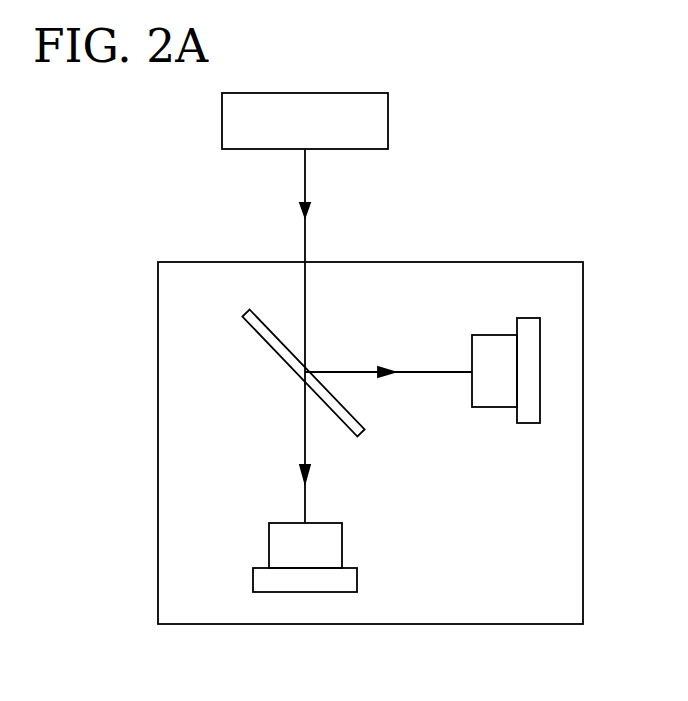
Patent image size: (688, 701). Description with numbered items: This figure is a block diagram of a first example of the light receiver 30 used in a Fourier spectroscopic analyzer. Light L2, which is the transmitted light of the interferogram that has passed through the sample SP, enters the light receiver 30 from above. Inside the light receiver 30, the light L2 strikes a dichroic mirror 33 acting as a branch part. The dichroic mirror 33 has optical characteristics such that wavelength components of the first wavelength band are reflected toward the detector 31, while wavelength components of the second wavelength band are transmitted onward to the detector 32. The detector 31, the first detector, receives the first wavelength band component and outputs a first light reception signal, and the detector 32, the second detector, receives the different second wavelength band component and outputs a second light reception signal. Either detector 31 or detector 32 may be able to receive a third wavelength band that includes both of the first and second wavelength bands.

The sample SP is at (388, 120).
The light transmitted through the sample L2 is at (307, 180).
The light receiver 30 is at (517, 262).
The detector 31 is at (493, 407).
The detector 32 is at (342, 540).
The dichroic mirror 33 is at (248, 328).